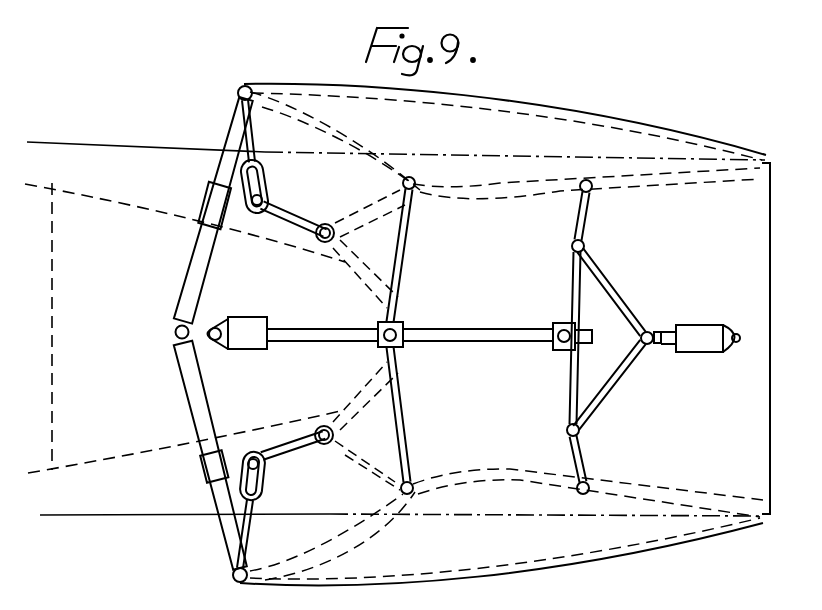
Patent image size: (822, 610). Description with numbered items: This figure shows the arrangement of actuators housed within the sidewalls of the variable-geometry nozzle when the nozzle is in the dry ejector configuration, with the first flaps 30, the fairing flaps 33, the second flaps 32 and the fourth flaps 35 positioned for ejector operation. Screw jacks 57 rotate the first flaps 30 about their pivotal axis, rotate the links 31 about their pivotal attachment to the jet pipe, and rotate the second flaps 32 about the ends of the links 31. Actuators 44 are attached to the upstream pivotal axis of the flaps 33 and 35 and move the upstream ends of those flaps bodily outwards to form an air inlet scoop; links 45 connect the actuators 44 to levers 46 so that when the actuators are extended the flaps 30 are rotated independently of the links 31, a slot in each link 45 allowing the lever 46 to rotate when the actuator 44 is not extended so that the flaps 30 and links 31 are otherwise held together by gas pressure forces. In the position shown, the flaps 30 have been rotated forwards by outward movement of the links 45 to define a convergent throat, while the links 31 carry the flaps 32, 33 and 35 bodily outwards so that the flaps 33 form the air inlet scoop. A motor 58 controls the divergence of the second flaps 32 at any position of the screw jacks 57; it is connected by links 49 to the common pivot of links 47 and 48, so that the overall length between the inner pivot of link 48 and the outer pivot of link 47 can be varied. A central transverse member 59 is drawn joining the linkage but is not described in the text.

The first flap 30 is at (357, 395).
The link 31 is at (355, 464).
The second flap 32 is at (535, 470).
The fairing flap 33 is at (354, 126).
The fourth flap 35 is at (657, 545).
The actuator 44 is at (190, 395).
The link 45 is at (245, 532).
The lever 46 is at (294, 217).
The link 47 is at (585, 455).
The link 48 is at (570, 387).
The link 49 is at (618, 380).
The screw jack 57 is at (248, 326).
The motor 58 is at (702, 325).
The transverse member 59 is at (402, 403).